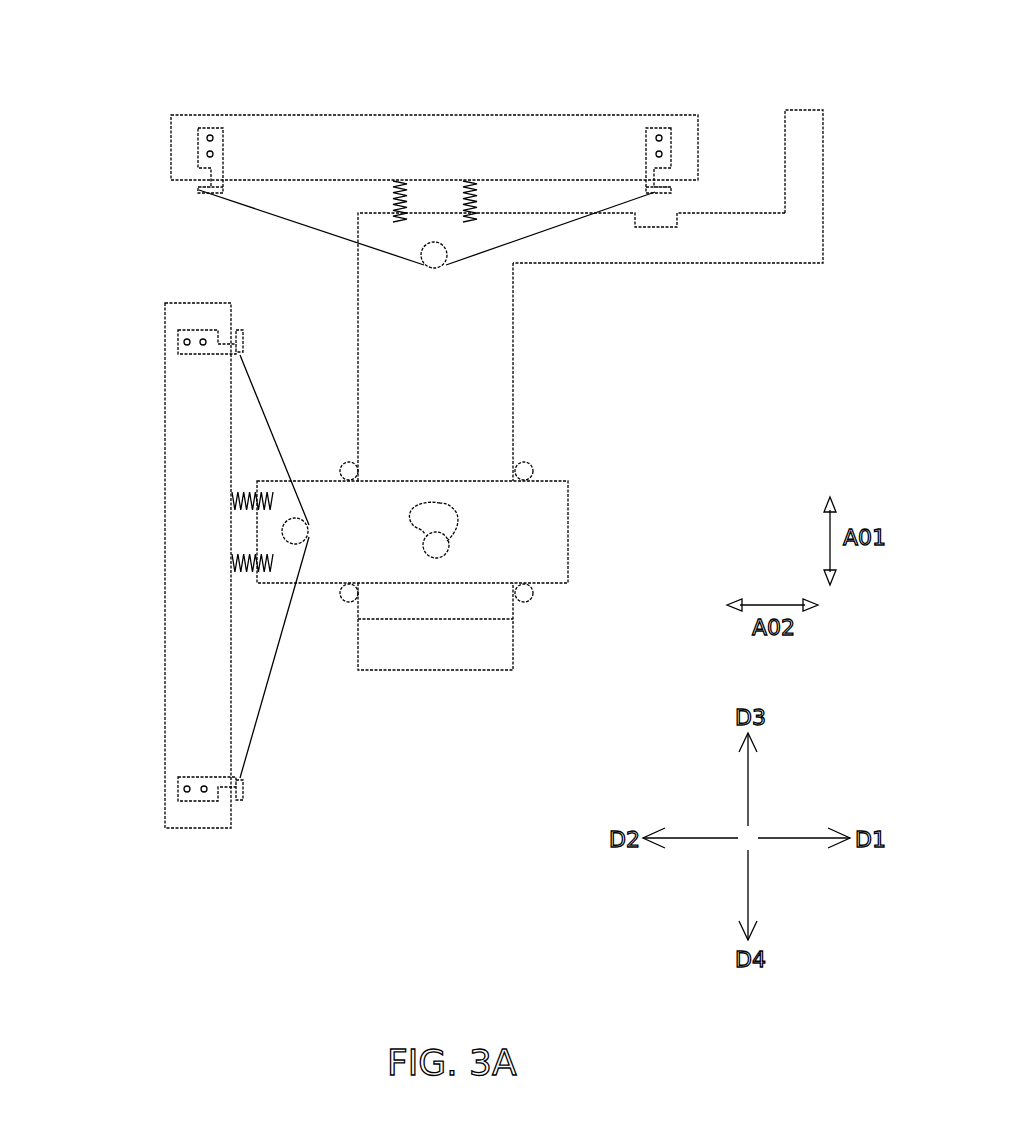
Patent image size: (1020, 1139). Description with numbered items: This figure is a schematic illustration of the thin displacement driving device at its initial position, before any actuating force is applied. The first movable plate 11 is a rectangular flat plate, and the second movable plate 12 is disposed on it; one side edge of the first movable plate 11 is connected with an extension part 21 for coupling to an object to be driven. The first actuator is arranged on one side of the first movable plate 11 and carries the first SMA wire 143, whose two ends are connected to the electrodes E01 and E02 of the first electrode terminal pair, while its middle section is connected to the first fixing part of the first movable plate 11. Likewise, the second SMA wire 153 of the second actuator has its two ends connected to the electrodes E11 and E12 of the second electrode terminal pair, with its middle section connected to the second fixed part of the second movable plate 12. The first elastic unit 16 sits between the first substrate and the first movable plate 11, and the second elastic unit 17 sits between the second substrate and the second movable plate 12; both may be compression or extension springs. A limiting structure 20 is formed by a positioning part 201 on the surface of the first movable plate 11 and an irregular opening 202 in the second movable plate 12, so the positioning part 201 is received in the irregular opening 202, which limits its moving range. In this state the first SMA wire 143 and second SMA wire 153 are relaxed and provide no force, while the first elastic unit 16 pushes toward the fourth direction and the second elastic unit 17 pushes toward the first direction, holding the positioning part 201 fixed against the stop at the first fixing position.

The electrode E01 is at (207, 128).
The electrode E02 is at (658, 135).
The electrode E11 is at (182, 790).
The electrode E12 is at (178, 333).
The first SMA wire 143 is at (314, 222).
The second SMA wire 153 is at (267, 424).
The first elastic unit 16 is at (465, 182).
The second elastic unit 17 is at (232, 500).
The first movable plate 11 is at (508, 318).
The second movable plate 12 is at (556, 497).
The extension part 21 is at (700, 250).
The limiting structure 20 is at (631, 481).
The positioning part 201 is at (440, 550).
The irregular opening 202 is at (433, 502).